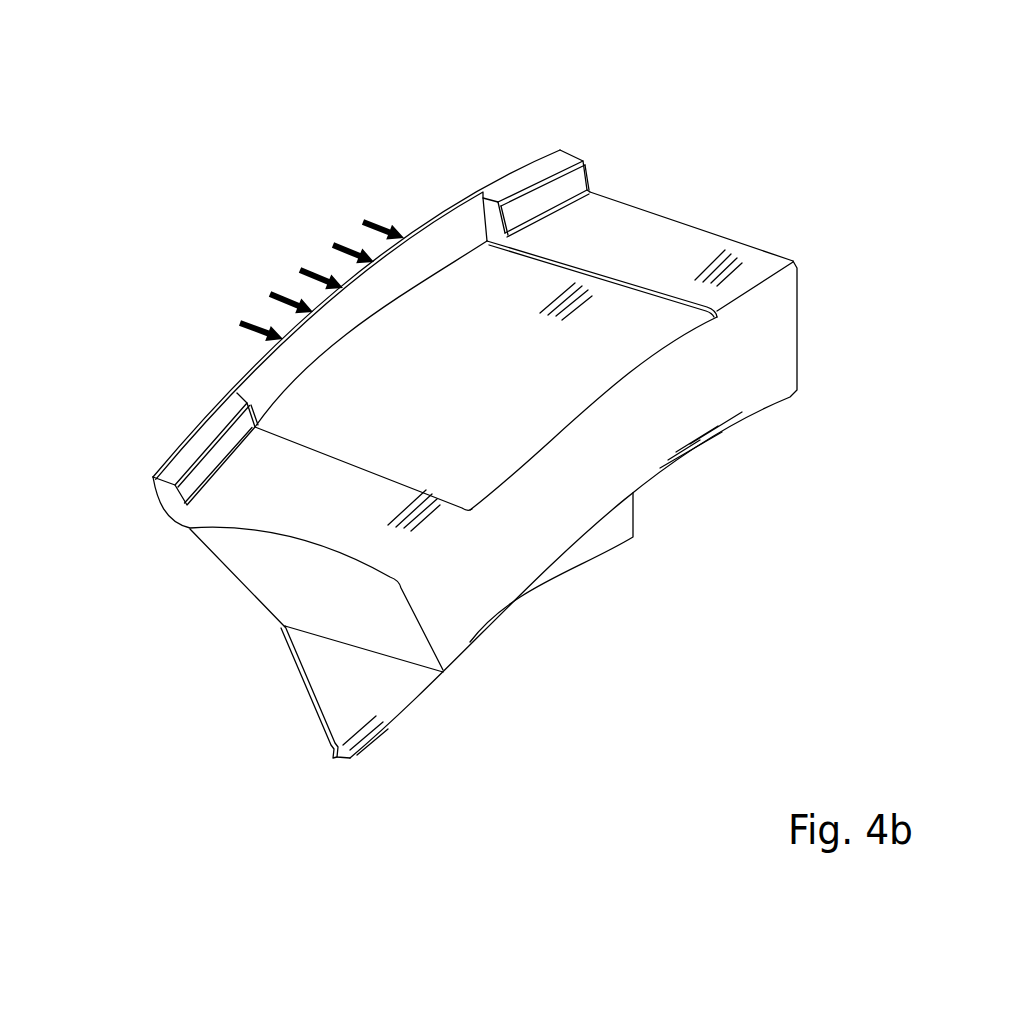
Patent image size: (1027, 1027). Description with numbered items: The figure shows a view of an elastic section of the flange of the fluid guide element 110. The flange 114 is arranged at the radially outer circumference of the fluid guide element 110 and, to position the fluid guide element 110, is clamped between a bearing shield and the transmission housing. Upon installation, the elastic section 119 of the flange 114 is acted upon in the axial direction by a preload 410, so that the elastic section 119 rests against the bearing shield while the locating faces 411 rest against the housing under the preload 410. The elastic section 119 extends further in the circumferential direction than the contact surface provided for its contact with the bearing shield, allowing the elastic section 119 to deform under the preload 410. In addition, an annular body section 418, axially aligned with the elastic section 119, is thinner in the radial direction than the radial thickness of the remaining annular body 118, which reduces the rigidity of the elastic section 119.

The fluid guide element 110 is at (480, 389).
The flange 114 is at (510, 186).
The annular body 118 is at (647, 240).
The elastic section 119 is at (423, 222).
The preload 410 is at (290, 297).
The locating face 411 is at (570, 187).
The annular body section 418 is at (620, 336).